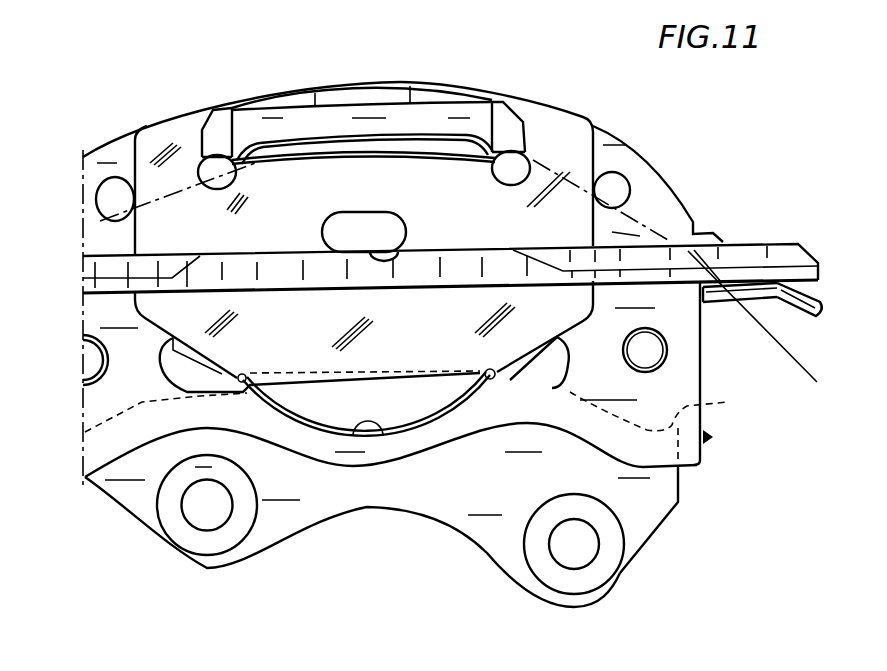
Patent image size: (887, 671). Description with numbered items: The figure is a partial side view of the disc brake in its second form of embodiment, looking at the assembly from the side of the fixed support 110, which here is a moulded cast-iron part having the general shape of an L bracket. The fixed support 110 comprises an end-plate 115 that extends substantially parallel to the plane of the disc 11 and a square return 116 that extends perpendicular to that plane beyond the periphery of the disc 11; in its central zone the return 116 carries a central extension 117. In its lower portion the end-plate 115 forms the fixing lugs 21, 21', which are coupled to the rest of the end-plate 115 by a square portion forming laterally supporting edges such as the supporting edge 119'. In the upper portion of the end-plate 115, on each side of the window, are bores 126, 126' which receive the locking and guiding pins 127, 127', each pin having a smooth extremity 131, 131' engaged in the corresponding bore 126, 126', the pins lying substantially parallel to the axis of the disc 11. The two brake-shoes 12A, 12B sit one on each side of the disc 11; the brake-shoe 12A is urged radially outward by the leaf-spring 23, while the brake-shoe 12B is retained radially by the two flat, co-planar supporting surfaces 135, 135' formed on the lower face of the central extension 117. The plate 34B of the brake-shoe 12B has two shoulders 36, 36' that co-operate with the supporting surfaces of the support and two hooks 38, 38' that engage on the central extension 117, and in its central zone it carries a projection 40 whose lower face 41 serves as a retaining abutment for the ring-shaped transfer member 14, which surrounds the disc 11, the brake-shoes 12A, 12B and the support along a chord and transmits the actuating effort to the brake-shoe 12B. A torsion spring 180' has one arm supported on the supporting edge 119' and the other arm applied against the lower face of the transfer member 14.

The disc 11 is at (768, 317).
The brake-shoe 12A is at (549, 353).
The brake-shoe 12B is at (587, 118).
The transfer member 14 is at (798, 243).
The fixing lug 21 is at (226, 519).
The fixing lug 21' is at (608, 544).
The leaf-spring 23 is at (479, 402).
The plate 34B is at (395, 197).
The shoulder 36 is at (195, 197).
The shoulder 36' is at (492, 185).
The hook 38 is at (191, 121).
The hook 38' is at (510, 105).
The projection 40 is at (378, 245).
The lower face 41 is at (403, 253).
The fixed support 110 is at (113, 504).
The end-plate 115 is at (611, 388).
The square return 116 is at (320, 87).
The central extension 117 is at (398, 114).
The supporting edge 119' is at (674, 427).
The bore 126 is at (88, 198).
The bore 126' is at (655, 178).
The locking and guiding pin 127 is at (150, 208).
The locking and guiding pin 127' is at (637, 200).
The smooth extremity 131 is at (133, 144).
The smooth extremity 131' is at (610, 158).
The supporting surface 135 is at (363, 112).
The supporting surface 135' is at (413, 116).
The torsion spring 180' is at (741, 334).